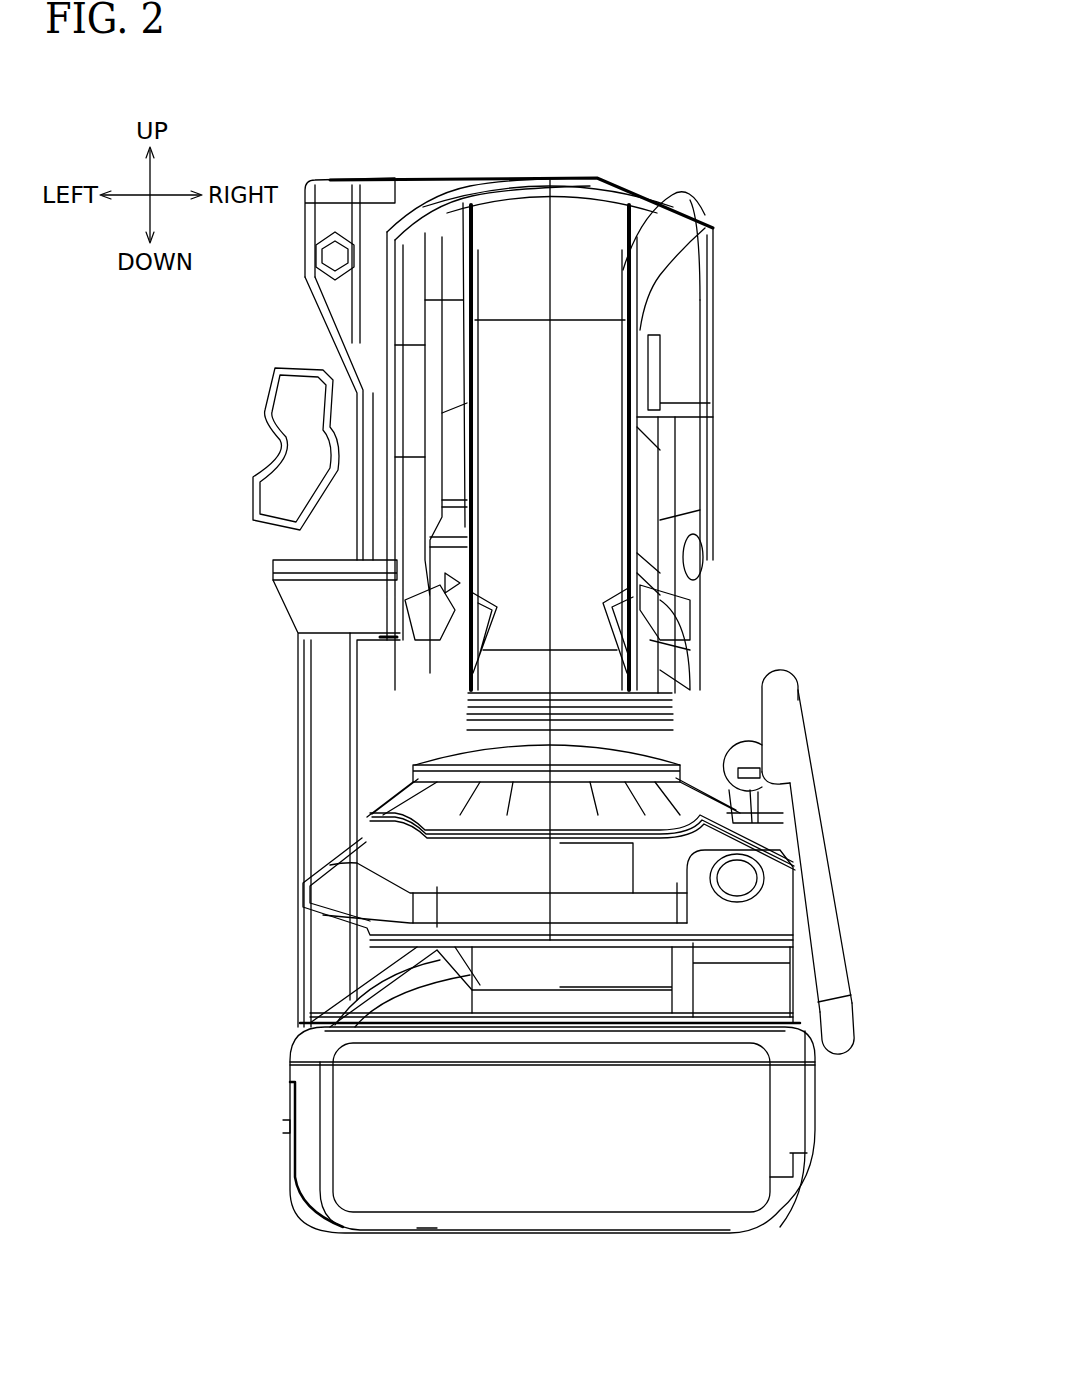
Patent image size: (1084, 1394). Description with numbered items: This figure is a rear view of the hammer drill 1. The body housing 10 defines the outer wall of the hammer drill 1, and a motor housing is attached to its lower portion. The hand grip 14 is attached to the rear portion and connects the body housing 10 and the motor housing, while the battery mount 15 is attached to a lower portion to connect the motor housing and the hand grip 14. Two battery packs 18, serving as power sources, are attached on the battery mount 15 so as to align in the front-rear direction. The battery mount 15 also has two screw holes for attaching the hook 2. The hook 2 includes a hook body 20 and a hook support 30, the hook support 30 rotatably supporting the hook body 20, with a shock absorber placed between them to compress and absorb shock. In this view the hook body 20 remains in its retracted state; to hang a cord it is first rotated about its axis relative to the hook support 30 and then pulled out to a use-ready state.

The hammer drill 1 is at (800, 162).
The hook 2 is at (875, 748).
The body housing 10 is at (572, 162).
The hand grip 14 is at (640, 520).
The battery mount 15 is at (385, 792).
The battery pack 18 is at (543, 1183).
The hook body 20 is at (838, 882).
The hook support 30 is at (740, 726).